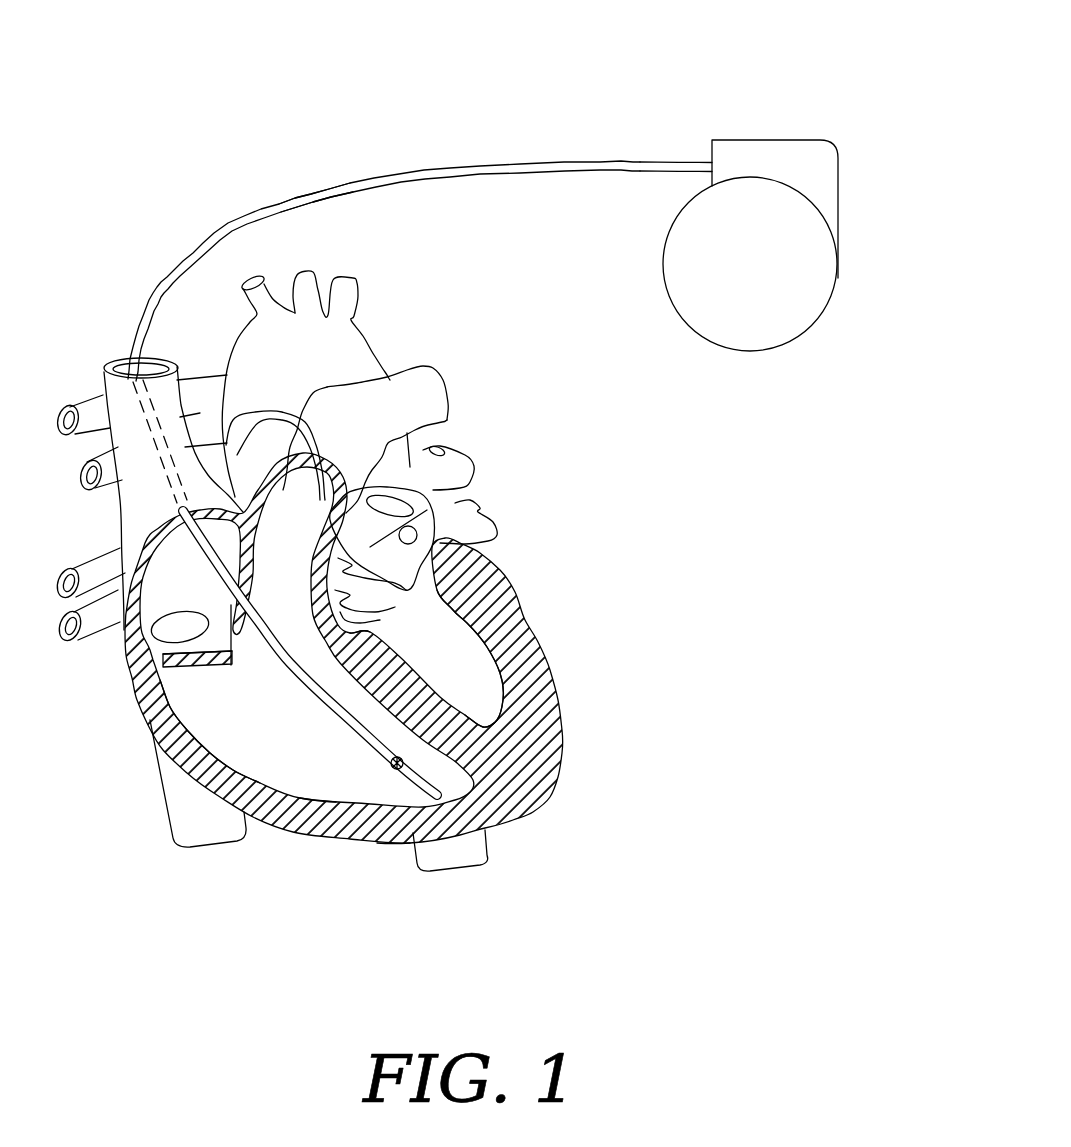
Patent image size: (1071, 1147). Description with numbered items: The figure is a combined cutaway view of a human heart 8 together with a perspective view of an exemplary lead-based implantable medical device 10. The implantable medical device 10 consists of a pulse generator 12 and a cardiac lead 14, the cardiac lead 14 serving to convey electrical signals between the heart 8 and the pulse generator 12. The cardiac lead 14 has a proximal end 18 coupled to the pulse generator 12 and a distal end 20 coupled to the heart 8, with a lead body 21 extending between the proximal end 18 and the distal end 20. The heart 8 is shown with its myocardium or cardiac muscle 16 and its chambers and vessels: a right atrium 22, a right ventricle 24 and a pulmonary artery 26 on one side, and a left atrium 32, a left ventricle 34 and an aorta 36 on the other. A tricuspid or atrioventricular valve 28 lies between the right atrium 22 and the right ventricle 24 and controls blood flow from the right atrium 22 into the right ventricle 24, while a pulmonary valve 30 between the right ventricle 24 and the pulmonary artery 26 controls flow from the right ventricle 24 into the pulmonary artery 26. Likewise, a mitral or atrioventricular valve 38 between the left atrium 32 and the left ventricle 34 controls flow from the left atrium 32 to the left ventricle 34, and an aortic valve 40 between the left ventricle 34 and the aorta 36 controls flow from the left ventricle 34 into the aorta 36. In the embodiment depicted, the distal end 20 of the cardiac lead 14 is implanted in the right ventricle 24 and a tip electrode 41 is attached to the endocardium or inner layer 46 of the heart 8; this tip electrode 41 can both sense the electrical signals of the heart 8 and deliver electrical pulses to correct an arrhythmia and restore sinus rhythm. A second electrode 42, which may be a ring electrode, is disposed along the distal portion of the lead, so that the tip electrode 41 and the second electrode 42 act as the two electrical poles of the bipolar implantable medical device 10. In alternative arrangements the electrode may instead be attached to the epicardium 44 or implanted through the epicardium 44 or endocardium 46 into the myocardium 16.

The human heart 8 is at (536, 434).
The implantable medical device 10 is at (386, 82).
The pulse generator 12 is at (806, 74).
The cardiac lead 14 is at (483, 163).
The myocardium 16 is at (543, 772).
The proximal end 18 is at (660, 163).
The distal end 20 is at (352, 742).
The lead body 21 is at (307, 192).
The right atrium 22 is at (177, 550).
The right ventricle 24 is at (243, 741).
The pulmonary artery 26 is at (388, 396).
The tricuspid valve 28 is at (197, 663).
The pulmonary valve 30 is at (400, 443).
The left atrium 32 is at (430, 500).
The left ventricle 34 is at (487, 690).
The aorta 36 is at (258, 345).
The mitral valve 38 is at (427, 563).
The aortic valve 40 is at (358, 604).
The tip electrode 41 is at (417, 800).
The second electrode 42 is at (378, 773).
The epicardium 44 is at (397, 840).
The endocardium 46 is at (367, 806).